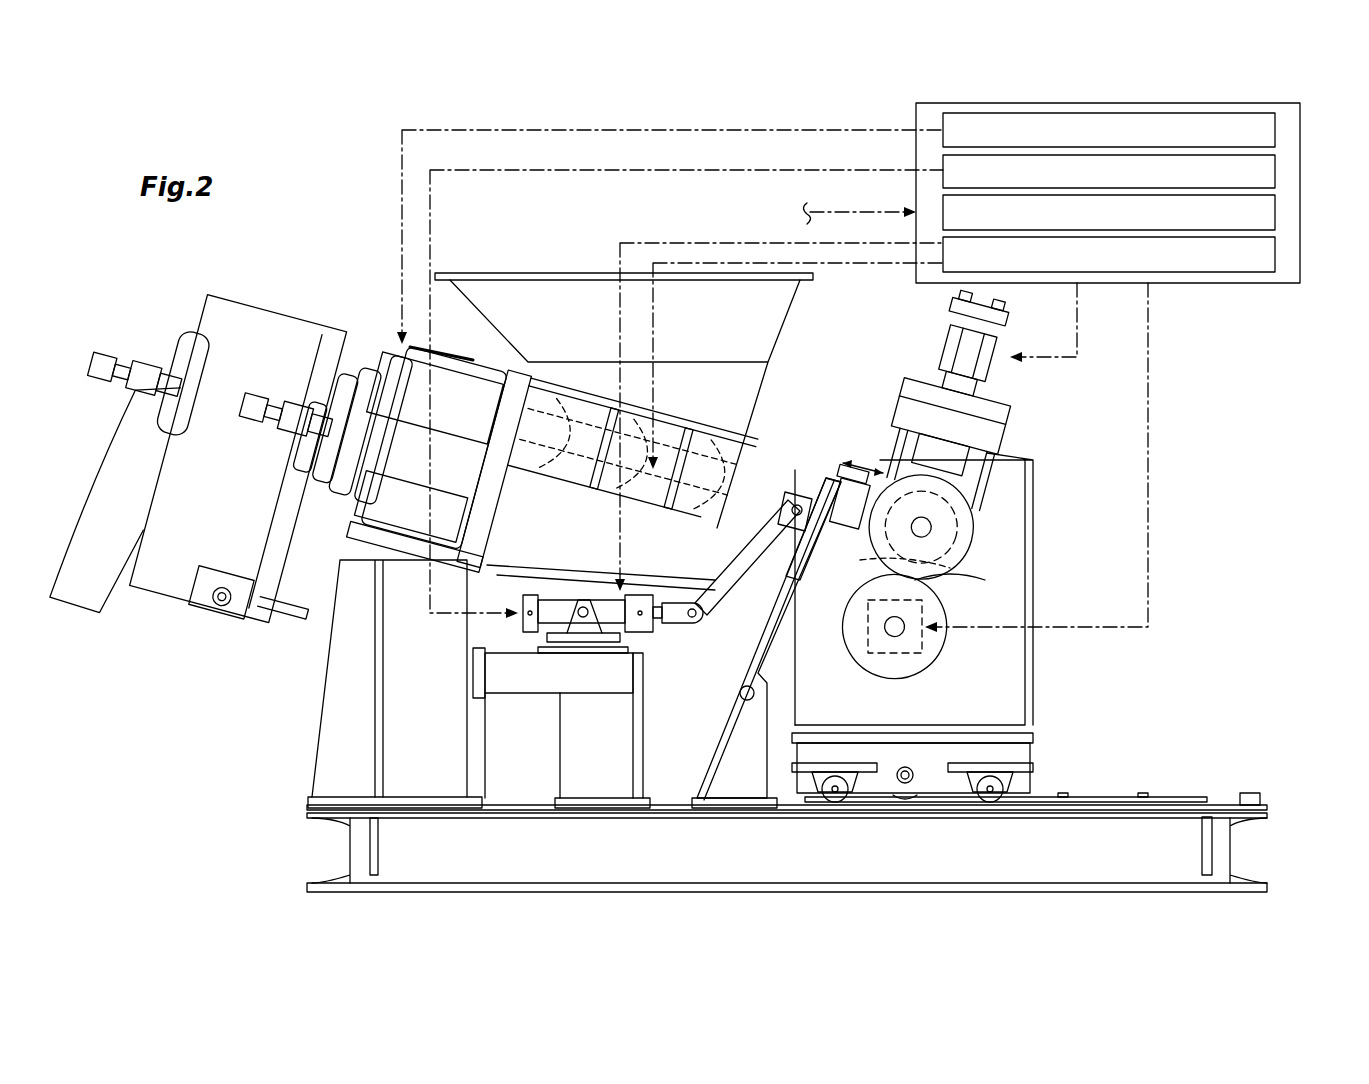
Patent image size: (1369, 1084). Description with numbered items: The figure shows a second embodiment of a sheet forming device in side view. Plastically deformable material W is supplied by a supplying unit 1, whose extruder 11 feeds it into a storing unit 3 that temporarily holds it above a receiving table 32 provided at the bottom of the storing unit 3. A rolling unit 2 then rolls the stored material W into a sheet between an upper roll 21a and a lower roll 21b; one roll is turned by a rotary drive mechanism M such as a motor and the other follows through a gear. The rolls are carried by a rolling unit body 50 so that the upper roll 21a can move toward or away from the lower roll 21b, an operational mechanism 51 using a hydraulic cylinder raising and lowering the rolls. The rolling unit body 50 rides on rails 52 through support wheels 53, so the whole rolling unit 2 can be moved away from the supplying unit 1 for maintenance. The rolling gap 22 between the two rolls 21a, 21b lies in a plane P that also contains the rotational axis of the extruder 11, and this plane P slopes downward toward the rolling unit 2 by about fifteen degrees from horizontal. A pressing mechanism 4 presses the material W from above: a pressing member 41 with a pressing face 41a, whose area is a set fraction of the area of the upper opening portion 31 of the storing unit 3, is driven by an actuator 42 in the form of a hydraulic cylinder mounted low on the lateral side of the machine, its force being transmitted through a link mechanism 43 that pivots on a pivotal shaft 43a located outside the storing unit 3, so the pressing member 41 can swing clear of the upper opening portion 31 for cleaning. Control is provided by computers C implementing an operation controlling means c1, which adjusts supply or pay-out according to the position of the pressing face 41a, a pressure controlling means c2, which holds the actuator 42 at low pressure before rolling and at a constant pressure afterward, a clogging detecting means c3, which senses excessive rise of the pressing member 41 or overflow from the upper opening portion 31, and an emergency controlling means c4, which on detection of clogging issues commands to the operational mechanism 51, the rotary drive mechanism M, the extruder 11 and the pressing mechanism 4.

The supplying unit 1 is at (535, 273).
The rolling unit 2 is at (963, 505).
The storing unit 3 is at (876, 622).
The pressing mechanism 4 is at (688, 635).
The extruder 11 is at (510, 607).
The upper roll 21a is at (970, 525).
The lower roll 21b is at (905, 665).
The roller nip 22 is at (945, 586).
The upper opening portion 31 is at (885, 472).
The receiving table 32 is at (846, 509).
The pressing member 41 is at (777, 643).
The pressing face 41a is at (863, 565).
The actuator 42 is at (567, 669).
The link mechanism 43 is at (736, 600).
The pivotal shaft 43a is at (795, 503).
The rolling unit body 50 is at (957, 774).
The operational mechanism 51 is at (940, 352).
The rails 52 is at (1128, 797).
The support wheels 53 is at (991, 802).
The computers C is at (1122, 237).
The operation controlling means c1 is at (1275, 140).
The pressure controlling means c2 is at (1275, 182).
The clogging detecting means c3 is at (1275, 224).
The emergency controlling means c4 is at (1275, 265).
The rotary drive mechanism M is at (933, 645).
The plane P is at (808, 642).
The material W is at (952, 574).